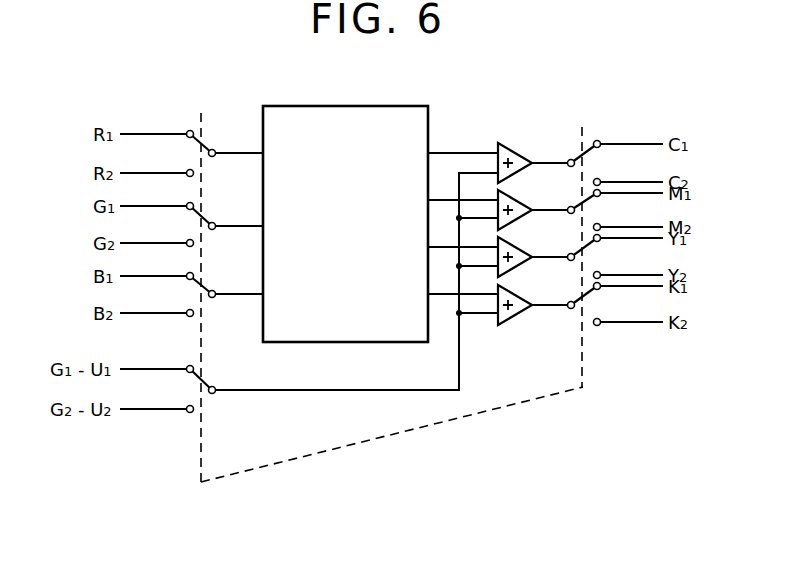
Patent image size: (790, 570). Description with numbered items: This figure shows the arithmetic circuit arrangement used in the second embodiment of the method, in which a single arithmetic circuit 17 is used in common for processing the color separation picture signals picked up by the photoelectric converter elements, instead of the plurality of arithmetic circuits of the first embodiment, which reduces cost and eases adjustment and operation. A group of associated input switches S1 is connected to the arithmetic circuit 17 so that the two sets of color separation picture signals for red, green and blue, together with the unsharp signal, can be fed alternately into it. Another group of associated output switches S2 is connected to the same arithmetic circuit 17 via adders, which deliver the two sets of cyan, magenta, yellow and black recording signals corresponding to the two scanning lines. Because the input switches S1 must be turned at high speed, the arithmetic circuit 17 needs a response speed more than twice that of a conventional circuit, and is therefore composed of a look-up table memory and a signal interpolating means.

The arithmetic circuit 17 is at (428, 119).
The input switches S1 is at (201, 285).
The output switches S2 is at (584, 246).